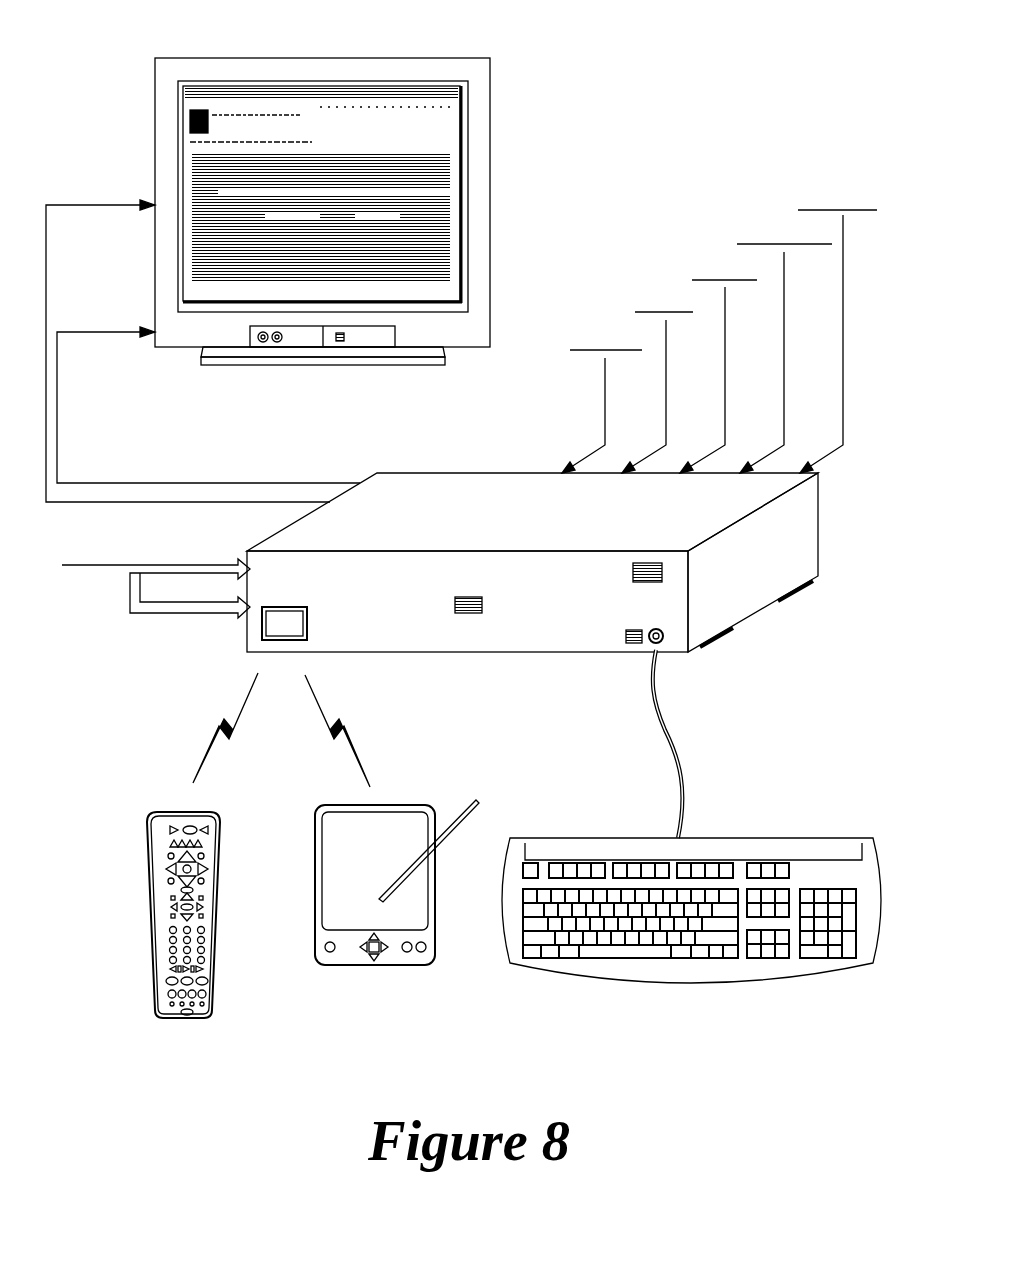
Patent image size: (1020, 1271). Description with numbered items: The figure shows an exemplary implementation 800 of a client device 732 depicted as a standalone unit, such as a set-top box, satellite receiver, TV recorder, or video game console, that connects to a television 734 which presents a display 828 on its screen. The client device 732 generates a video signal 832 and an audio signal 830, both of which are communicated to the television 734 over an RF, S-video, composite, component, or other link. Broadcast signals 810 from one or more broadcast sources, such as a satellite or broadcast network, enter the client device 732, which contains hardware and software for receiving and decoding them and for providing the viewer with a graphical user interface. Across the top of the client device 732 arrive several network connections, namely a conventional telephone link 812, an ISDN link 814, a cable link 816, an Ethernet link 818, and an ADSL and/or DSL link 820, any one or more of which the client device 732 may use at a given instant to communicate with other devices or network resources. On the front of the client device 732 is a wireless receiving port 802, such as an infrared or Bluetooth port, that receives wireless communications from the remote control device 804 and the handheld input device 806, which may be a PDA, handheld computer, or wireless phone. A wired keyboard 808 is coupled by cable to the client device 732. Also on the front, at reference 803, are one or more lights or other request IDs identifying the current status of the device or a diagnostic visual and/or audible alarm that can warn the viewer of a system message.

The exemplary implementation 800 is at (665, 51).
The display 828 is at (183, 89).
The television 734 is at (458, 341).
The video signal 832 is at (121, 237).
The audio signal 830 is at (121, 365).
The telephone link 812 is at (605, 310).
The ISDN link 814 is at (665, 272).
The cable link 816 is at (722, 240).
The Ethernet link 818 is at (782, 205).
The ADSL and/or DSL link 820 is at (838, 168).
The client device 732 is at (532, 536).
The wireless receiving port 802 is at (338, 577).
The lights or request IDs 803 is at (516, 550).
The broadcast signal 810 is at (62, 566).
The remote control device 804 is at (155, 820).
The handheld input device 806 is at (392, 805).
The wired keyboard 808 is at (725, 838).